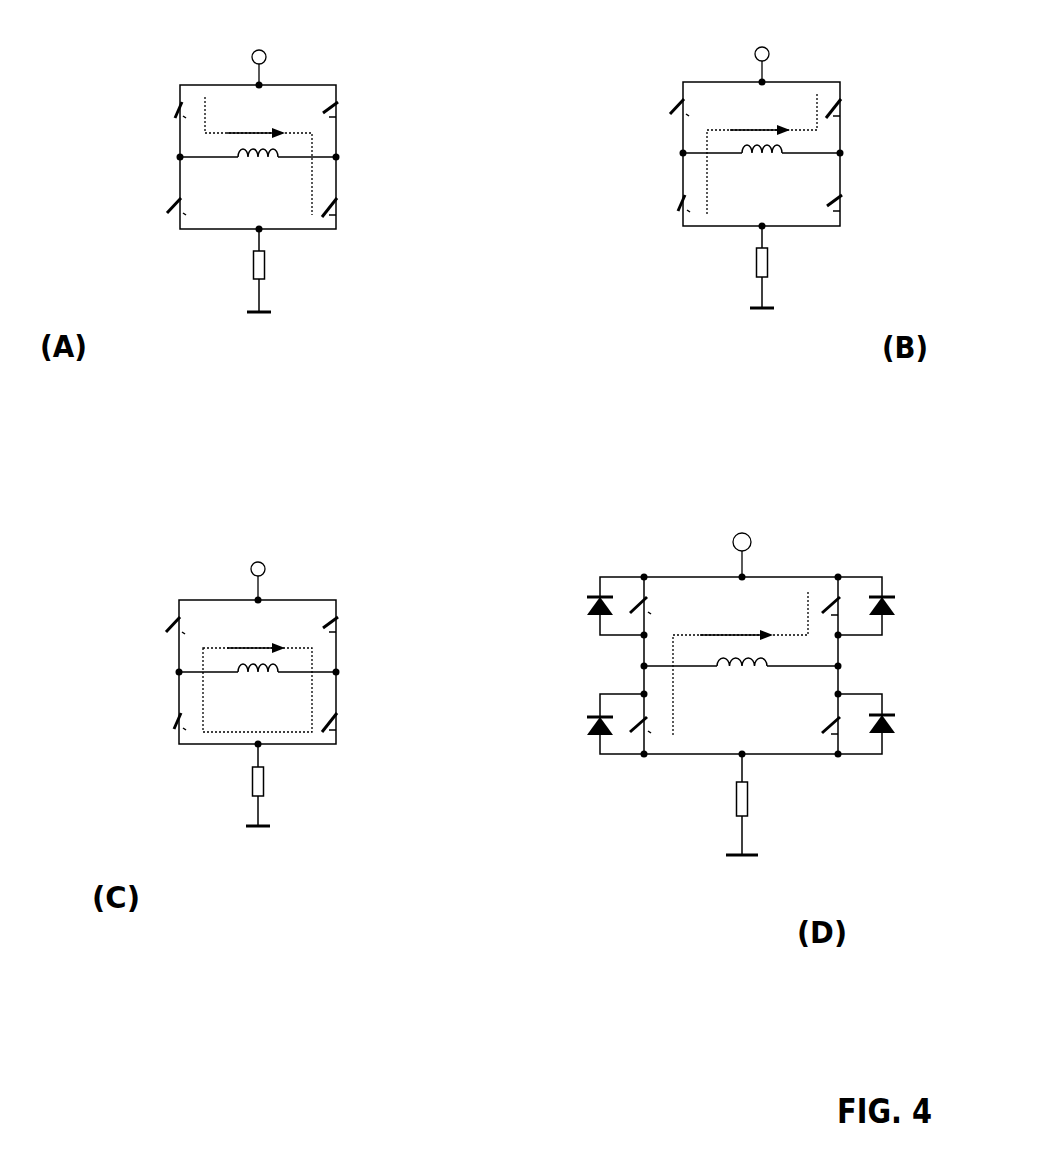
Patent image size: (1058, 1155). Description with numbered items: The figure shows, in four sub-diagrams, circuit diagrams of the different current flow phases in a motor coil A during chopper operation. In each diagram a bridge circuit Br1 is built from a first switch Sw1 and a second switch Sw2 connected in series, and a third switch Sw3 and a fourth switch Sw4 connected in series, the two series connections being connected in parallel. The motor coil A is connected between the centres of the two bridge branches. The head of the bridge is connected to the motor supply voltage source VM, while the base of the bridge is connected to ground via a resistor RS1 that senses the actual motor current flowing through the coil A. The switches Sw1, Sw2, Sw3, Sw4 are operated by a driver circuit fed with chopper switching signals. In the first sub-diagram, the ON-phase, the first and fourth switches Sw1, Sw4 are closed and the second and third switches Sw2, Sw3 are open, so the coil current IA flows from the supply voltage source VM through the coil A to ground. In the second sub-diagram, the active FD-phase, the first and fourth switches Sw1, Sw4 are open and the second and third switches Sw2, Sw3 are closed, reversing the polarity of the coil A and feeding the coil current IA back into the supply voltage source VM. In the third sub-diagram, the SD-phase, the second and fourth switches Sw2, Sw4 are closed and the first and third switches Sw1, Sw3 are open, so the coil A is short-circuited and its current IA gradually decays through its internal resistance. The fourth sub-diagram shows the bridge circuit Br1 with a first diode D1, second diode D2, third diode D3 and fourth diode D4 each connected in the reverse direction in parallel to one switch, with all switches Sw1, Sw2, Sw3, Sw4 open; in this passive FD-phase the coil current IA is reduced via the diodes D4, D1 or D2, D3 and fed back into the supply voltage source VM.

The motor supply voltage source VM is at (518, 303).
The bridge circuit Br1 is at (108, 152).
The first switch Sw1 is at (400, 365).
The second switch Sw2 is at (400, 493).
The third switch Sw3 is at (613, 364).
The fourth switch Sw4 is at (612, 493).
The motor coil A is at (509, 422).
The coil current IA is at (510, 415).
The resistor RS1 is at (531, 540).
The first diode D1 is at (597, 606).
The second diode D2 is at (597, 724).
The third diode D3 is at (886, 606).
The fourth diode D4 is at (886, 724).